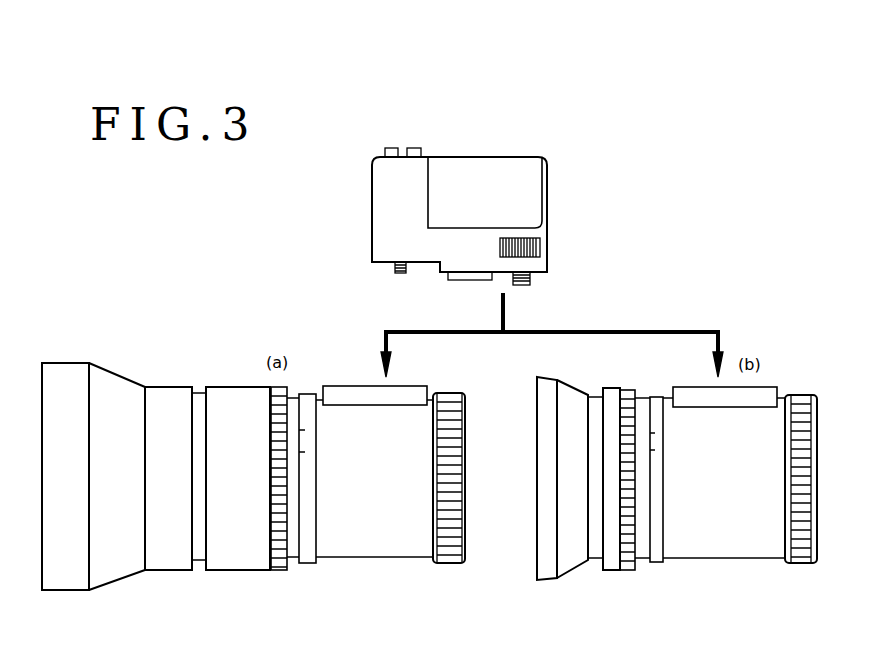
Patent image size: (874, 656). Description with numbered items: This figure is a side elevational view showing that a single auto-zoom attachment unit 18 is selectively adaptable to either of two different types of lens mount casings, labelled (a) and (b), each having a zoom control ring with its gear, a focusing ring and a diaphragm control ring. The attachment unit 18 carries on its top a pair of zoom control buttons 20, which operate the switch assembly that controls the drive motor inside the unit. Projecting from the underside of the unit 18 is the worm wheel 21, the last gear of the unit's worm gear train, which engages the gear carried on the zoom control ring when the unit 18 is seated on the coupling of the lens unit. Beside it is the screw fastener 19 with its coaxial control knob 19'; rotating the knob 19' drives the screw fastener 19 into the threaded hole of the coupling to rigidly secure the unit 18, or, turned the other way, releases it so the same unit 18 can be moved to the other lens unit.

The attachment unit 18 is at (388, 190).
The screw fastener 19 is at (556, 280).
The control knob 19' is at (552, 243).
The zoom control buttons 20 is at (424, 122).
The worm wheel 21 is at (395, 272).